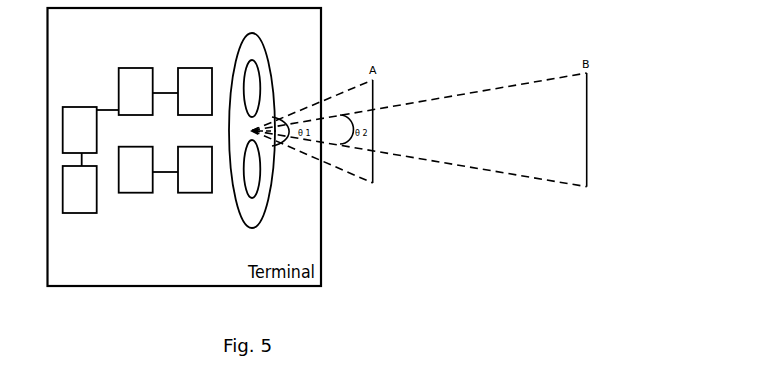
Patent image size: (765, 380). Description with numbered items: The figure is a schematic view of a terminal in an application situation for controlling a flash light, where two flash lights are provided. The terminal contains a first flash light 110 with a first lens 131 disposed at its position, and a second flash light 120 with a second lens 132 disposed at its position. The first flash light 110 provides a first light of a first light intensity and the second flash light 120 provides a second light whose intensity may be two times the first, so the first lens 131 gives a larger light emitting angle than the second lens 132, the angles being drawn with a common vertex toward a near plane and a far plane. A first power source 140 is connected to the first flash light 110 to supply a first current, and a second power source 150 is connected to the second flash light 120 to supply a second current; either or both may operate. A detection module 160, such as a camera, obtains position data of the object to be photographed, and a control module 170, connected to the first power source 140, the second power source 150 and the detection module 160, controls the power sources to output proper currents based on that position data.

The first flash light 110 is at (207, 68).
The second flash light 120 is at (202, 193).
The first lens 131 is at (257, 72).
The second lens 132 is at (258, 190).
The first power source 140 is at (151, 68).
The second power source 150 is at (140, 193).
The detection module 160 is at (90, 213).
The control module 170 is at (93, 107).